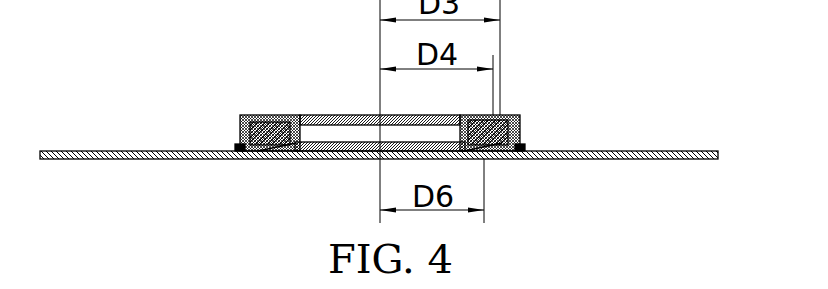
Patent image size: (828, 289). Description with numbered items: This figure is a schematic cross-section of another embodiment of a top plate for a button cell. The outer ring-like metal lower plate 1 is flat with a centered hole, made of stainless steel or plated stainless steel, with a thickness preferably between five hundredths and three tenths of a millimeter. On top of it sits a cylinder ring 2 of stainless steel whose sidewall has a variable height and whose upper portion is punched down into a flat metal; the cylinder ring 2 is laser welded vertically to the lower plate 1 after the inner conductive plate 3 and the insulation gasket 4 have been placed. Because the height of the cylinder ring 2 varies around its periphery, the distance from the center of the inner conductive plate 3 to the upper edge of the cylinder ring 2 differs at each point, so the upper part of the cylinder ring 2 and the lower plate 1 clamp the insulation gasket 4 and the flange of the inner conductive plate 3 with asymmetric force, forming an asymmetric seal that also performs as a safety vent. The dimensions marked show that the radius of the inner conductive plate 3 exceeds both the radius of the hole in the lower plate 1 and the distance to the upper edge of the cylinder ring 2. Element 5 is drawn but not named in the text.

The lower plate 1 is at (205, 158).
The cylinder ring 2 is at (518, 116).
The inner conductive plate 3 is at (364, 85).
The insulation gasket 4 is at (242, 95).
The bottom plate 5 is at (380, 187).